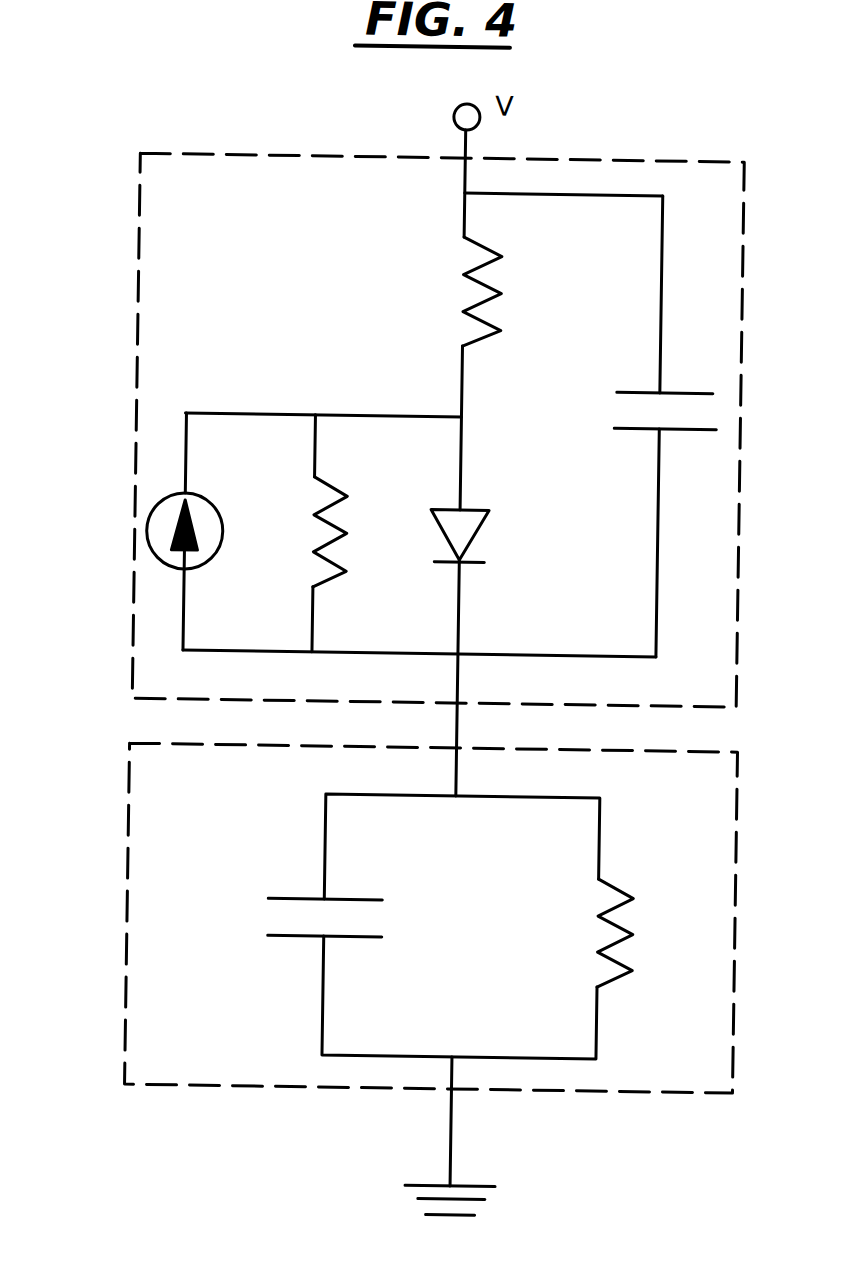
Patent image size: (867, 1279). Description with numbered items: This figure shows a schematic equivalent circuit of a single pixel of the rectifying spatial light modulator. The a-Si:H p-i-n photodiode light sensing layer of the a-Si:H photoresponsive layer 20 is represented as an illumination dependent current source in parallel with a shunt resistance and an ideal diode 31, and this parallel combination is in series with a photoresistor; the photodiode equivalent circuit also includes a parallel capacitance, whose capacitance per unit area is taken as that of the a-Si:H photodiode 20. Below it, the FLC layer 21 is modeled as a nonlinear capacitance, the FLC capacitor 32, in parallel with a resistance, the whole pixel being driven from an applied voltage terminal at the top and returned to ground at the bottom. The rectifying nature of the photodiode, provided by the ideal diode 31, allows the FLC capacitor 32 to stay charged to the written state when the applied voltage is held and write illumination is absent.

The a-Si:H photoresponsive layer 20 is at (131, 389).
The FLC layer 21 is at (126, 778).
The ideal diode 31 is at (474, 537).
The FLC capacitor 32 is at (289, 917).